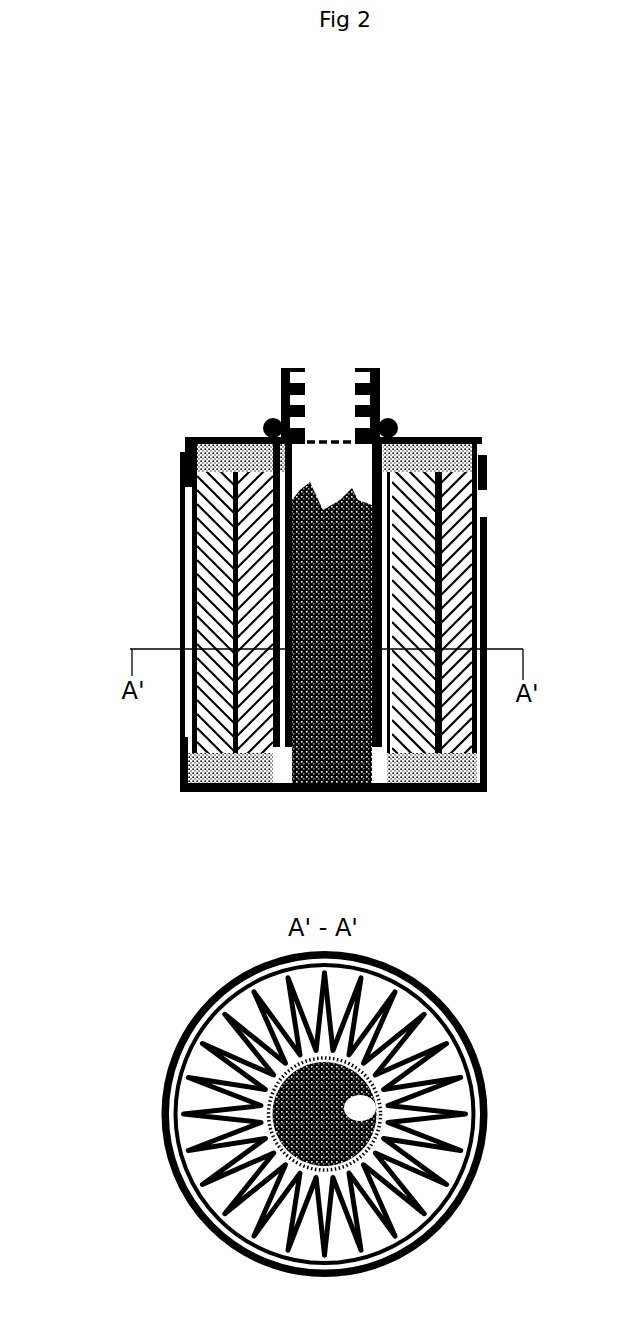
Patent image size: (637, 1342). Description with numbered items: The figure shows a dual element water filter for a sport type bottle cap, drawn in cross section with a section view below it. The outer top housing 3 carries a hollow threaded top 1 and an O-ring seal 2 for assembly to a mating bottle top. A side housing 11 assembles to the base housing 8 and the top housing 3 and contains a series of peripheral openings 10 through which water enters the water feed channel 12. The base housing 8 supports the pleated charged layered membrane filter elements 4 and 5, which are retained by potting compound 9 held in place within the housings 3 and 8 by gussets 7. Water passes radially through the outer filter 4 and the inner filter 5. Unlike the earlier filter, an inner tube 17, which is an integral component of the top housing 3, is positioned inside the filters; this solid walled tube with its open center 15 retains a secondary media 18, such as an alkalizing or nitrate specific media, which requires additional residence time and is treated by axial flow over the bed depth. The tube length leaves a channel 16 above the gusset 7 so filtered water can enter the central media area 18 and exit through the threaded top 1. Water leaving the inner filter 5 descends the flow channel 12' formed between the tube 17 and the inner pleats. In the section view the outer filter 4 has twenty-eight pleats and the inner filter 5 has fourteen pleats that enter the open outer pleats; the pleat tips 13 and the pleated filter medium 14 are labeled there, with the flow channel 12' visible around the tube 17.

The threaded top 1 is at (268, 377).
The O-ring seal 2 is at (265, 424).
The outer top housing 3 is at (213, 435).
The outer charged layered membrane filter 4 is at (222, 563).
The inner charged layered membrane filter 5 is at (257, 630).
The gusset 7 is at (437, 1125).
The base housing 8 is at (487, 782).
The potting compound 9 is at (485, 768).
The peripheral openings 10 is at (480, 503).
The side housing 11 is at (487, 558).
The water feed channel 12 is at (539, 598).
The flow channel 12' is at (391, 845).
The pleat tips 13 is at (203, 1060).
The pleated filter medium 14 is at (331, 1004).
The open center 15 is at (337, 462).
The channel 16 is at (395, 792).
The inner tube 17 is at (380, 612).
The secondary media 18 is at (373, 710).